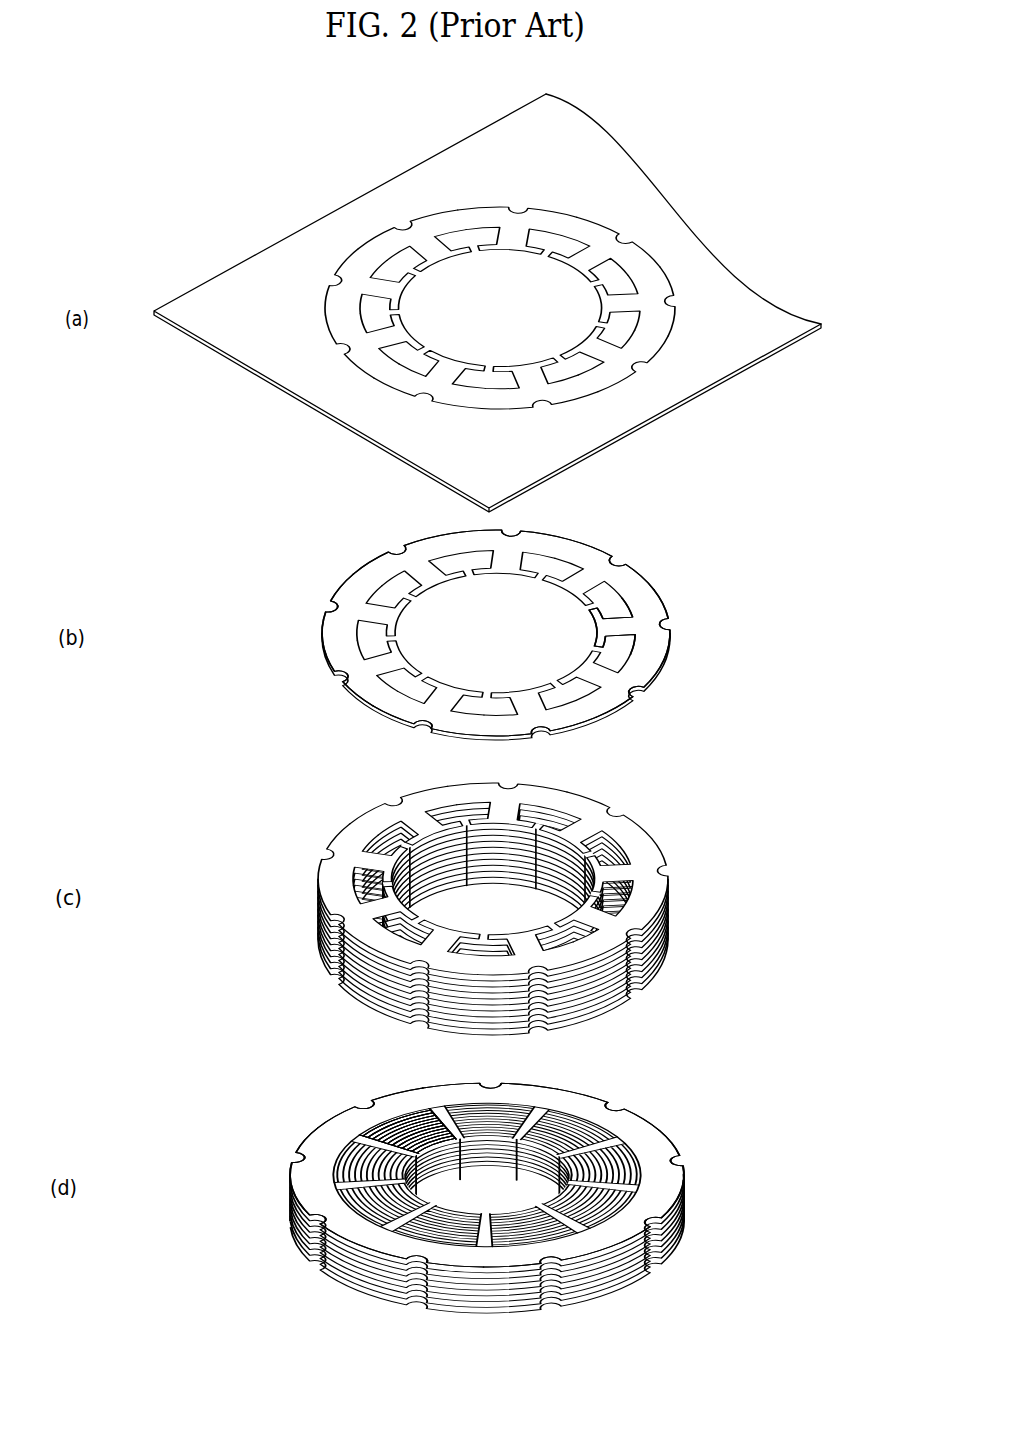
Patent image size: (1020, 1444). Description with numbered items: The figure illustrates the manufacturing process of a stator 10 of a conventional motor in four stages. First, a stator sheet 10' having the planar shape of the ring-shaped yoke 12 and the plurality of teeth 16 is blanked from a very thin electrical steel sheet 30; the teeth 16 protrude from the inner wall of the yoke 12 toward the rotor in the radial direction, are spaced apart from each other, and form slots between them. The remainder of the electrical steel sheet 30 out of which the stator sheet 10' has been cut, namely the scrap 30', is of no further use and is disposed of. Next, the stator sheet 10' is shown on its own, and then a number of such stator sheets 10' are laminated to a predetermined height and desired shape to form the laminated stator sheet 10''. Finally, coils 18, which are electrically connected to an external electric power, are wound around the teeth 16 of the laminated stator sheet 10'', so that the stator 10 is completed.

The stator 10 is at (510, 1188).
The stator sheet 10' is at (504, 571).
The laminated stator sheet 10'' is at (514, 889).
The yoke 12 is at (630, 578).
The teeth 16 is at (622, 622).
The coils 18 is at (370, 1118).
The electrical steel sheet 30 is at (487, 303).
The scrap 30' is at (683, 209).